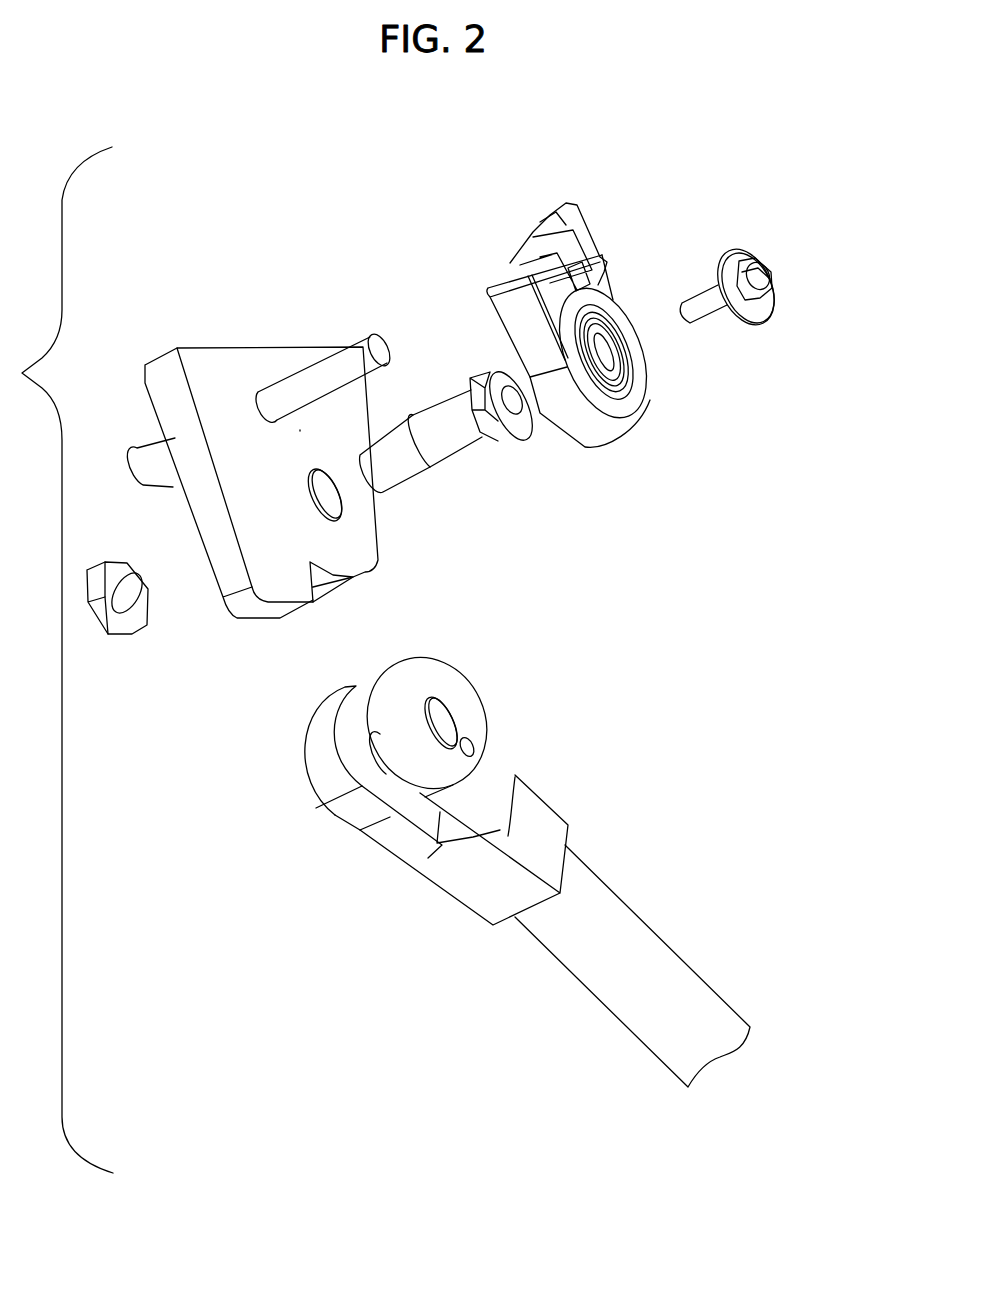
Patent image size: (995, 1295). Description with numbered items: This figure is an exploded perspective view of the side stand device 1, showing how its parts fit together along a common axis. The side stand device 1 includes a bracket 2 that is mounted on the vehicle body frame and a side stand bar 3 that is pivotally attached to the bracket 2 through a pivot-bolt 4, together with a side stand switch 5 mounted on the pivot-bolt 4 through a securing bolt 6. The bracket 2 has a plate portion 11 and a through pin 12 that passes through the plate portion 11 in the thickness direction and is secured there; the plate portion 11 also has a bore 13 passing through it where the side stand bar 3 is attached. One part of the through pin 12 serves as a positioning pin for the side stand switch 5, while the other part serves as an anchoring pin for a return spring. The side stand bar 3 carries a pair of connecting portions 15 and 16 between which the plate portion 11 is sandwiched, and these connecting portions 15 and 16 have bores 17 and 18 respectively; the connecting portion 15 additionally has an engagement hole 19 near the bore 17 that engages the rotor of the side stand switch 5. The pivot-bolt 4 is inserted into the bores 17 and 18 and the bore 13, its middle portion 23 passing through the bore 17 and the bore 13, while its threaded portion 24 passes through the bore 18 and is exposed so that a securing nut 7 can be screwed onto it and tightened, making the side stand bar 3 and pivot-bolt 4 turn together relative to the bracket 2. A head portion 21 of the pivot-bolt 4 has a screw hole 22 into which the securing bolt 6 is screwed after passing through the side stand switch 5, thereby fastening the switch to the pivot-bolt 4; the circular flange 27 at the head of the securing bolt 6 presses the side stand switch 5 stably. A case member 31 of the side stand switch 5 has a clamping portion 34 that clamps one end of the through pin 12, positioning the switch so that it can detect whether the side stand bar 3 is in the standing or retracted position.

The side stand device 1 is at (690, 178).
The bracket 2 is at (220, 332).
The side stand bar 3 is at (612, 870).
The pivot-bolt 4 is at (404, 384).
The side stand switch 5 is at (608, 290).
The securing bolt 6 is at (766, 256).
The securing nut 7 is at (118, 568).
The plate portion 11 is at (272, 362).
The through pin 12 is at (355, 350).
The bore 13 is at (325, 507).
The connecting portion 15 is at (432, 672).
The connecting portion 16 is at (303, 737).
The bore 17 is at (443, 723).
The bore 18 is at (381, 772).
The engagement hole 19 is at (469, 747).
The head portion 21 is at (497, 374).
The screw hole 22 is at (517, 410).
The middle portion 23 is at (447, 412).
The threaded portion 24 is at (393, 448).
The circular flange 27 is at (763, 308).
The case member 31 is at (645, 397).
The clamping portion 34 is at (583, 237).